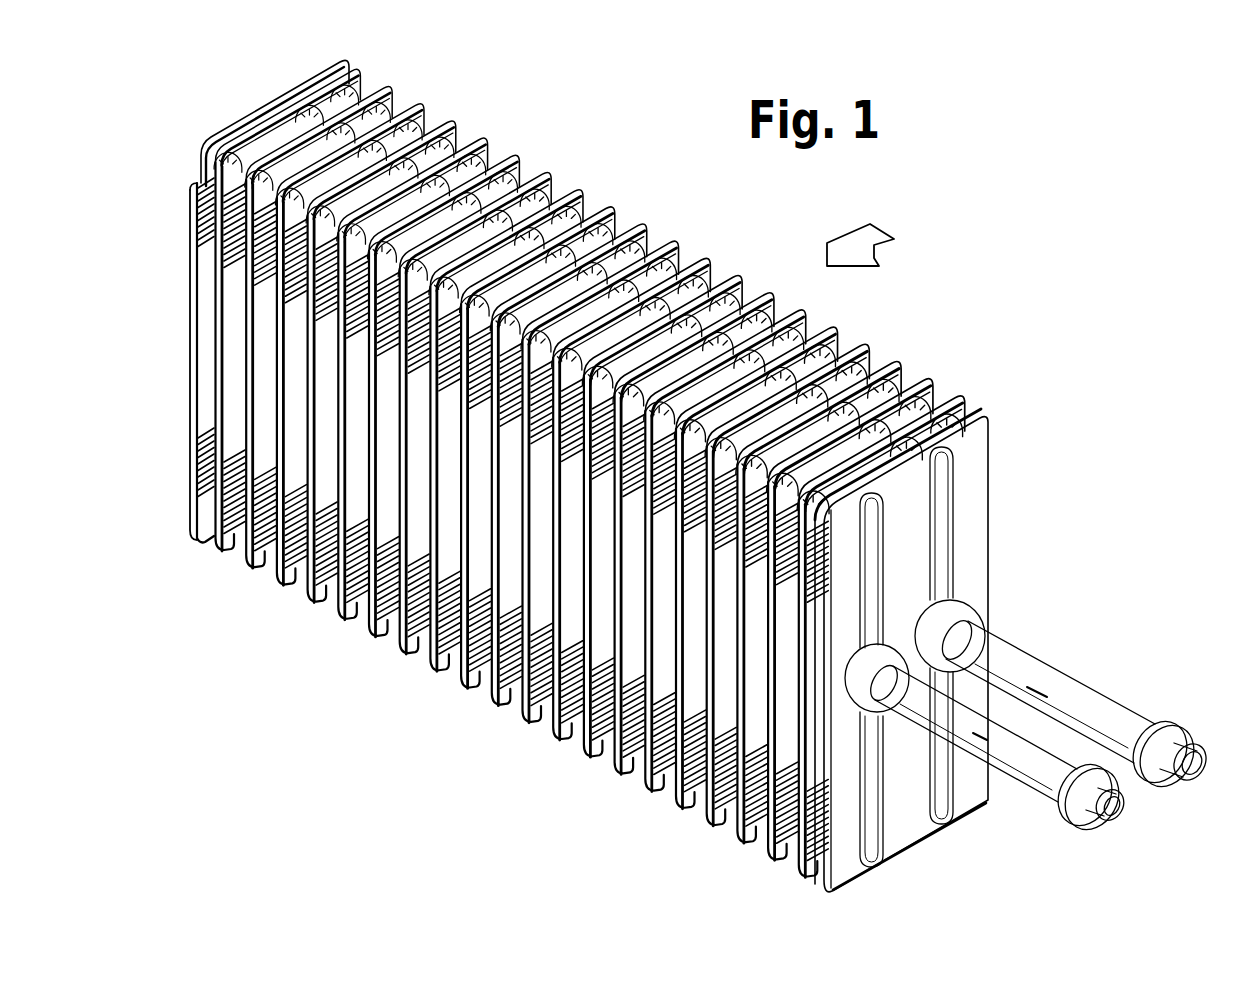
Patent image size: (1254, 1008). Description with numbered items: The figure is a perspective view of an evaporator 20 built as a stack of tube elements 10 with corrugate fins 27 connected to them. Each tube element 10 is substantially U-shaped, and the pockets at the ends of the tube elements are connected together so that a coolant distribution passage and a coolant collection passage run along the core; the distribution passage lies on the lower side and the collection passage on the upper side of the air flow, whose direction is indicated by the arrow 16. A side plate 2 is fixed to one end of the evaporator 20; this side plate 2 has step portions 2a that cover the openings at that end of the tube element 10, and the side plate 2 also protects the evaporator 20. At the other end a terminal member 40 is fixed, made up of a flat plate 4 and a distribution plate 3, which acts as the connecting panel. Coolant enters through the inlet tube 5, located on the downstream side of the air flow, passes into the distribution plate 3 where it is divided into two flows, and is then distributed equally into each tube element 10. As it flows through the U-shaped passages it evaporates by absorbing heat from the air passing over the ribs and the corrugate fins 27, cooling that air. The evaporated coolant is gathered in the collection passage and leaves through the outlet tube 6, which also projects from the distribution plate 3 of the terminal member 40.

The side plate 2 is at (345, 62).
The step portions 2a is at (198, 165).
The distribution plate 3 is at (978, 467).
The flat plate 4 is at (975, 402).
The inlet tube 5 is at (1030, 787).
The outlet tube 6 is at (1088, 695).
The tube elements 10 is at (893, 372).
The arrow 16 is at (892, 243).
The evaporator 20 is at (612, 203).
The corrugate fins 27 is at (762, 857).
The terminal member 40 is at (992, 424).